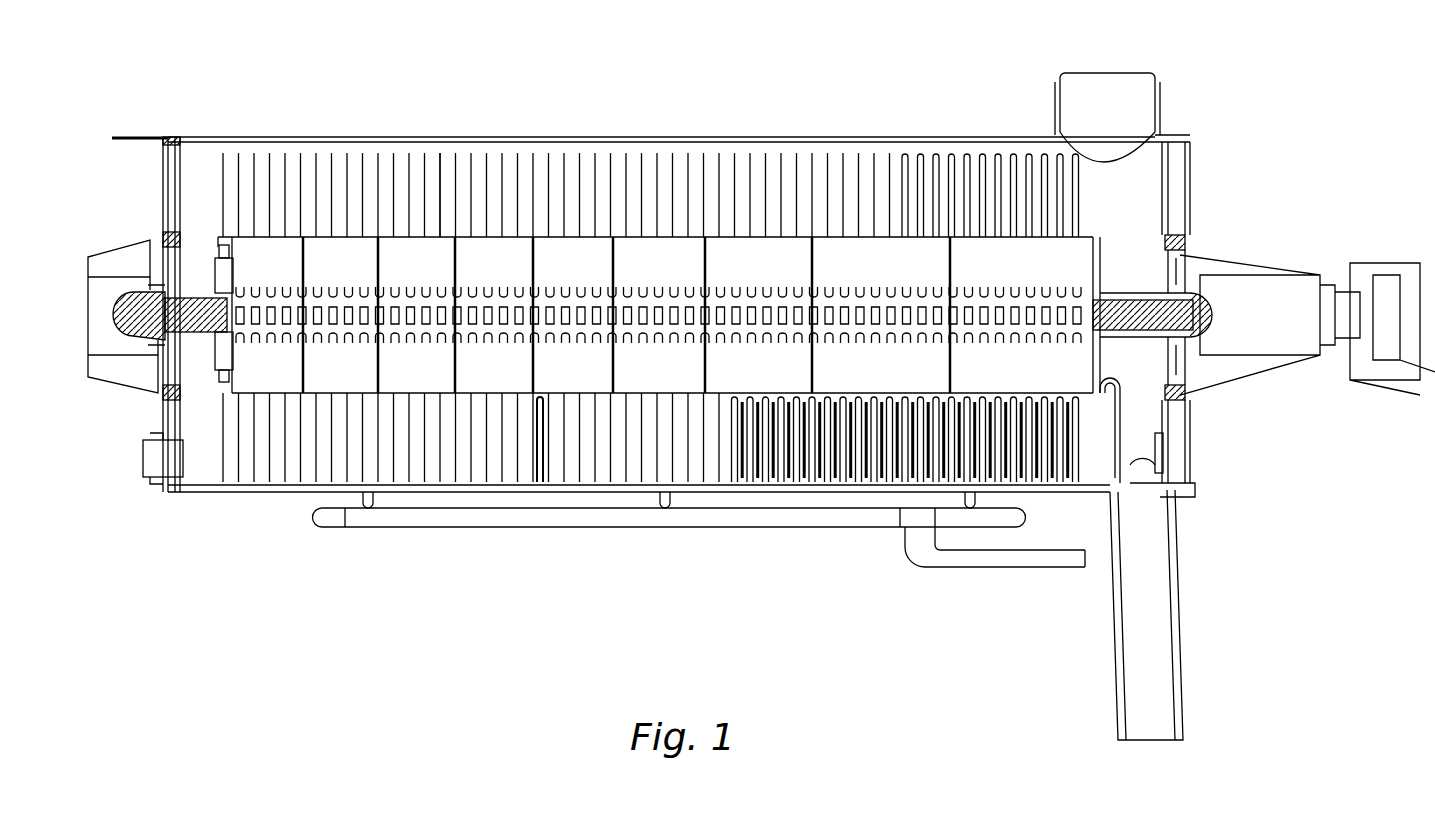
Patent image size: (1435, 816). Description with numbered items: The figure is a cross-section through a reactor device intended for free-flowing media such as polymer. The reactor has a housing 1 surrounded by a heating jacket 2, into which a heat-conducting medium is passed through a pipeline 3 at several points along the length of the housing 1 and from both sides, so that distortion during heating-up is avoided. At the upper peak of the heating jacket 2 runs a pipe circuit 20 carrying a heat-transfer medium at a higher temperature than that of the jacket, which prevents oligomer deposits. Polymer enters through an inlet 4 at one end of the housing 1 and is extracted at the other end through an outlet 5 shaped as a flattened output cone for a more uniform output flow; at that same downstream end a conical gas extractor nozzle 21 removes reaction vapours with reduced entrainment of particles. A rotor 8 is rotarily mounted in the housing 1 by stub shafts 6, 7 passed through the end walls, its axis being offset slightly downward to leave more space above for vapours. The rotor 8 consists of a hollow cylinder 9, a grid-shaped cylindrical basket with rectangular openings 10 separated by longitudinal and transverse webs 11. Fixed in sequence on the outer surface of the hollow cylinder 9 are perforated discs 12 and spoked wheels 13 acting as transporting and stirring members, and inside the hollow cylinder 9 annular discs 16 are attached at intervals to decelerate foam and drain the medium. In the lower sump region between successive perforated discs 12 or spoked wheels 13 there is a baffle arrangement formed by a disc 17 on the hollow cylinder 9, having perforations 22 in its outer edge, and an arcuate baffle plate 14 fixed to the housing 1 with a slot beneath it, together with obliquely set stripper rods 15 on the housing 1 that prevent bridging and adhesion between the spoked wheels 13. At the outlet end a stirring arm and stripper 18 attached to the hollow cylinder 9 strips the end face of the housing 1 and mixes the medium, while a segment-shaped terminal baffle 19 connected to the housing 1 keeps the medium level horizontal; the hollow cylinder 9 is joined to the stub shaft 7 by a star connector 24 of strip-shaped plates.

The housing 1 is at (295, 143).
The heating jacket 2 is at (397, 137).
The pipeline 3 is at (457, 517).
The inlet 4 is at (163, 455).
The outlet 5 is at (1155, 642).
The stub shaft 6 is at (160, 345).
The stub shaft 7 is at (1143, 309).
The rotor 8 is at (218, 245).
The hollow cylinder 9 is at (527, 180).
The rectangular openings 10 is at (338, 318).
The webs 11 is at (290, 318).
The perforated discs 12 is at (440, 172).
The spoked wheels 13 is at (925, 180).
The baffle plate 14 is at (545, 398).
The stripper rods 15 is at (785, 460).
The annular discs 16 is at (533, 250).
The disc 17 is at (478, 237).
The stirring arm and stripper 18 is at (1165, 450).
The terminal baffle 19 is at (1120, 425).
The pipe circuit 20 is at (130, 137).
The gas extractor nozzle 21 is at (1133, 95).
The perforations 22 is at (478, 237).
The star connector 24 is at (1165, 236).